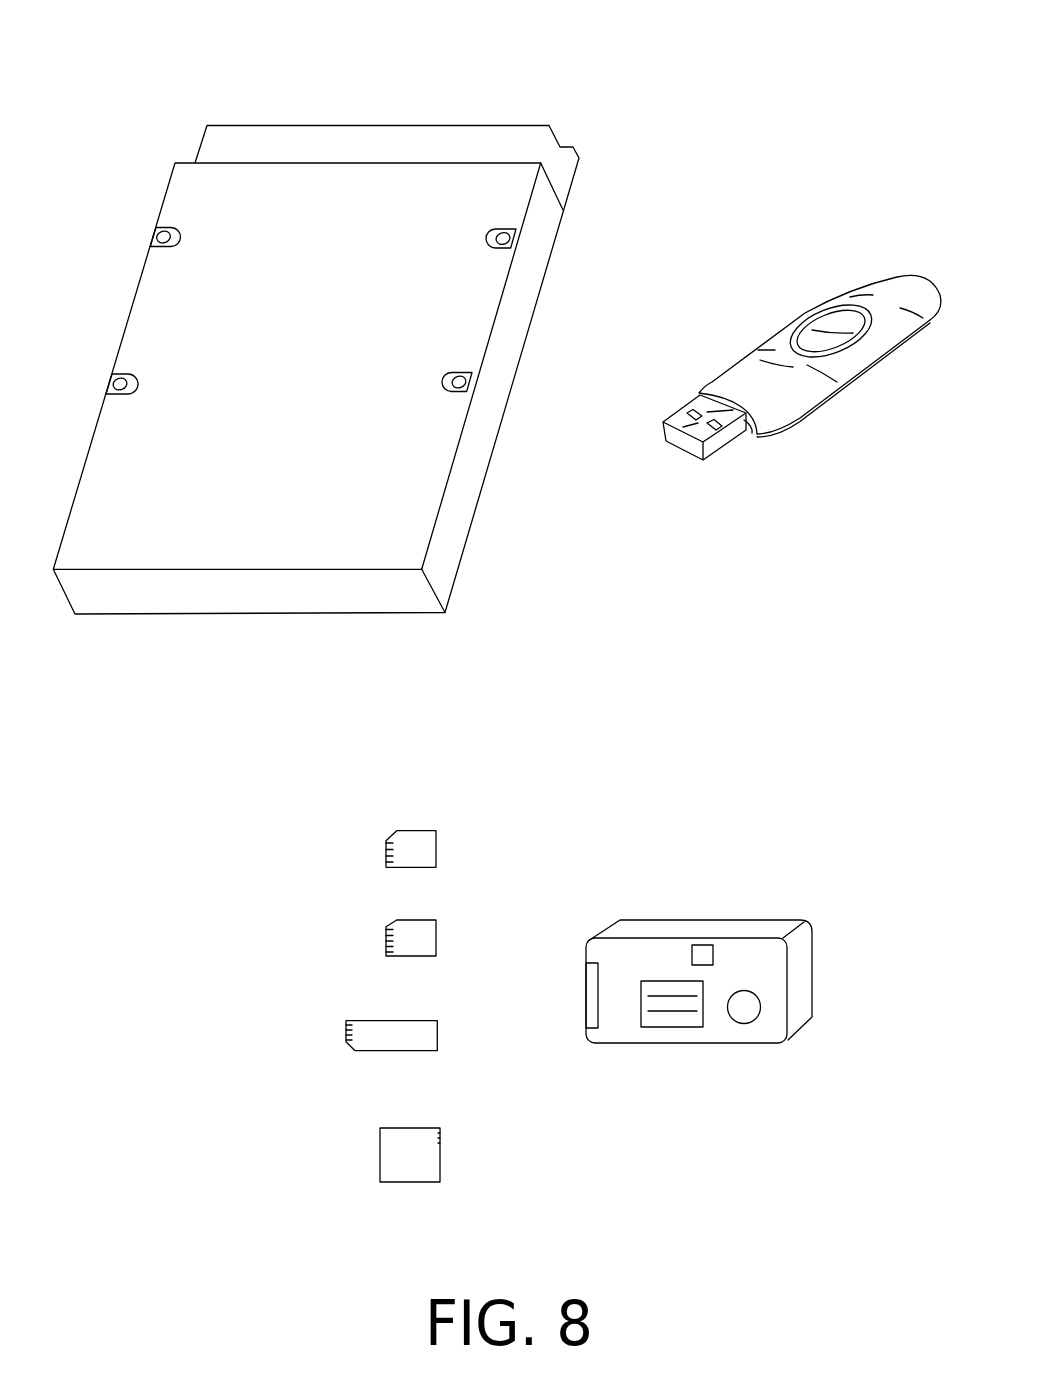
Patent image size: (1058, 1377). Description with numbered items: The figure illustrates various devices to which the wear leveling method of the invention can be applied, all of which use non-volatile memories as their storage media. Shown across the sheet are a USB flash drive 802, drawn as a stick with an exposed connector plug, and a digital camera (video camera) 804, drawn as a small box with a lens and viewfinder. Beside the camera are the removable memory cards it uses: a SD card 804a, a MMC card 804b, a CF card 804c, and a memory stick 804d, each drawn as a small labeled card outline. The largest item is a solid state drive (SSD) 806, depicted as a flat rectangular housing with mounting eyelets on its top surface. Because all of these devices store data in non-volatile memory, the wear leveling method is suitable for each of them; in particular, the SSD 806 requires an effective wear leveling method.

The solid state drive 806 is at (540, 97).
The USB flash drive 802 is at (787, 332).
The digital camera 804 is at (815, 965).
The SD card 804a is at (436, 840).
The MMC card 804b is at (436, 929).
The CF card 804c is at (440, 1148).
The memory stick 804d is at (437, 1035).